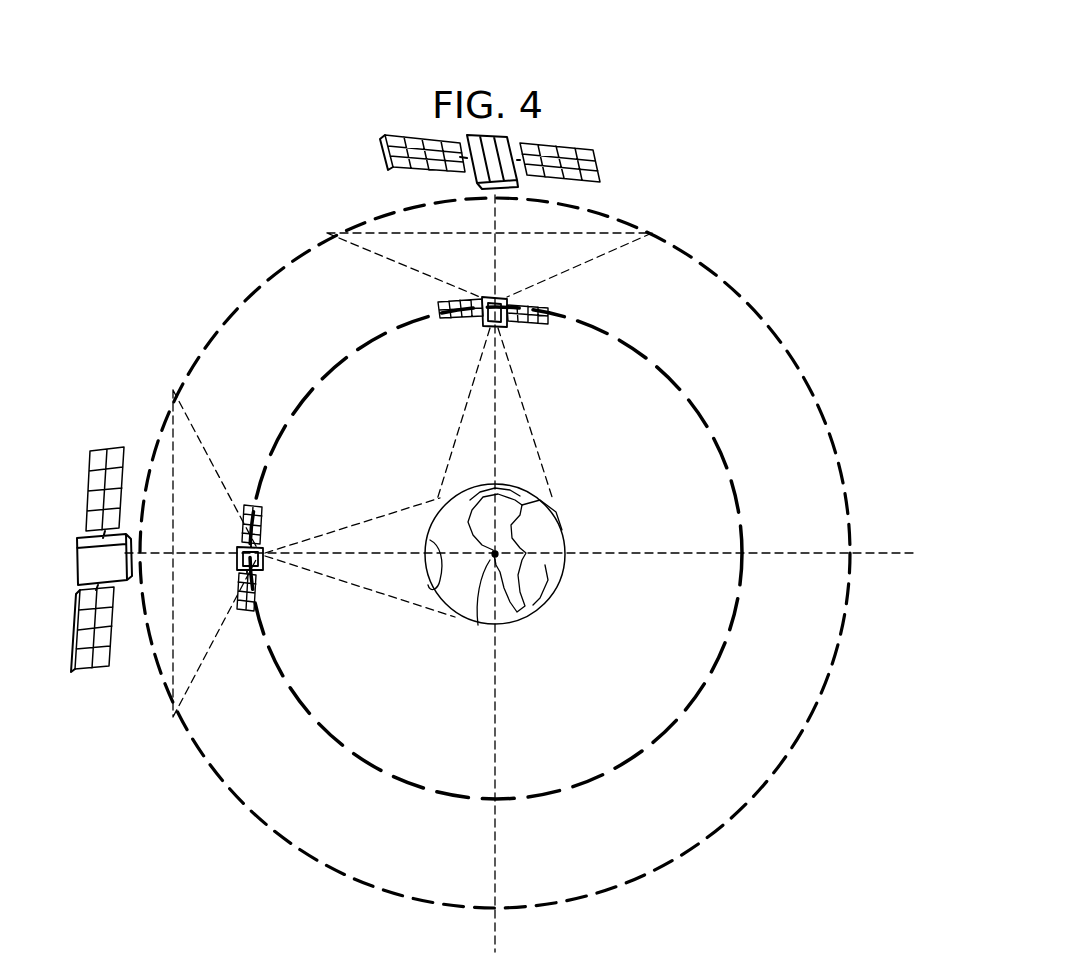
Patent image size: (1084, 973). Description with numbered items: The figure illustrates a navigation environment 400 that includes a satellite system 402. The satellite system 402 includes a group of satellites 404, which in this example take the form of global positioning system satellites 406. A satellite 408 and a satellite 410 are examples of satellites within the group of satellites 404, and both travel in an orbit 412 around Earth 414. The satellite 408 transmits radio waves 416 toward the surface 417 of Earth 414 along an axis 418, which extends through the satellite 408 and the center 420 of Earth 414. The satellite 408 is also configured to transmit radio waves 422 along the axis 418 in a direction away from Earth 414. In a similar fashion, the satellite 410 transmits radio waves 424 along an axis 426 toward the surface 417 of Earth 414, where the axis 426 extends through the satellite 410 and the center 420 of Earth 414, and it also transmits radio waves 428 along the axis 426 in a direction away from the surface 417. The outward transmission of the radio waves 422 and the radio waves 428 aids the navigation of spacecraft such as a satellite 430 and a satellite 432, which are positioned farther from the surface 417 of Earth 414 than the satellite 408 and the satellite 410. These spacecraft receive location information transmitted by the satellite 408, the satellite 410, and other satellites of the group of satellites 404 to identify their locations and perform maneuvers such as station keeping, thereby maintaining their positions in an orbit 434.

The navigation environment 400 is at (492, 481).
The satellite system 402 is at (496, 559).
The group of satellites 404 is at (495, 554).
The global positioning system satellites 406 is at (495, 554).
The satellite 408 is at (250, 494).
The satellite 410 is at (464, 330).
The orbit 412 is at (622, 760).
The Earth 414 is at (527, 577).
The radio waves 416 is at (372, 516).
The surface 417 is at (520, 612).
The axis 418 is at (875, 550).
The center 420 is at (478, 618).
The radio waves 422 is at (202, 668).
The radio waves 424 is at (538, 462).
The axis 426 is at (500, 932).
The radio waves 428 is at (398, 260).
The satellite 430 is at (105, 450).
The satellite 432 is at (600, 163).
The orbit 434 is at (668, 863).